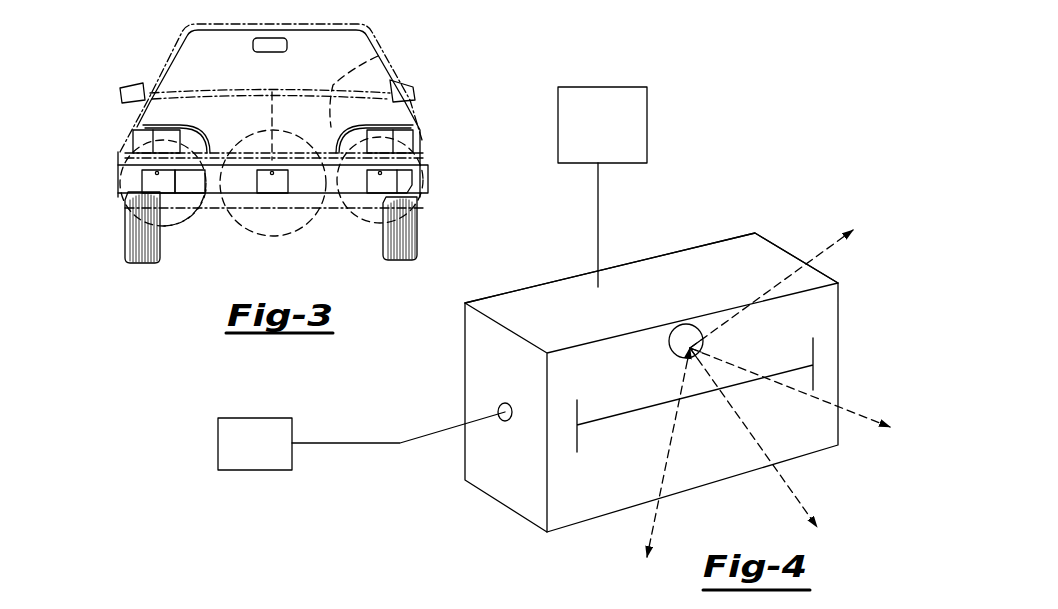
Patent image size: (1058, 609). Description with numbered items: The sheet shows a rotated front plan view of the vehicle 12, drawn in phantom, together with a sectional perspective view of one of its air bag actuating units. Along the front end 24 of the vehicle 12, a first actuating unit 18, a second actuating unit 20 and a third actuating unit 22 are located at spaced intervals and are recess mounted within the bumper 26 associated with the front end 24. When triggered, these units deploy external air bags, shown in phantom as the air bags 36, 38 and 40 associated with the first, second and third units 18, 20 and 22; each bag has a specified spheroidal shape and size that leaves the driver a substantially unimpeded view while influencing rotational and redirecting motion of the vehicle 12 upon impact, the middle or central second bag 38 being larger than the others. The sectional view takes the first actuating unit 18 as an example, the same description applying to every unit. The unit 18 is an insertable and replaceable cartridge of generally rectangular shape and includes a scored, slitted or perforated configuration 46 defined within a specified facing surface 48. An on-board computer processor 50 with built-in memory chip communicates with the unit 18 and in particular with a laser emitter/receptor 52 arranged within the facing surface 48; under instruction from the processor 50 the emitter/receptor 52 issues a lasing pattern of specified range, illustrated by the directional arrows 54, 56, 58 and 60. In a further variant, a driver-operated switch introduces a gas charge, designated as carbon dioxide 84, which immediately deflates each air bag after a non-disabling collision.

In FIG. 3, the vehicle 12 is at (110, 54).
In FIG. 3, the first actuating unit 18 is at (425, 148).
In FIG. 4, the first actuating unit 18 is at (745, 236).
In FIG. 3, the second actuating unit 20 is at (283, 185).
In FIG. 3, the third actuating unit 22 is at (150, 183).
In FIG. 3, the front end 24 is at (378, 57).
In FIG. 3, the bumper 26 is at (205, 195).
In FIG. 3, the air bag 36 is at (413, 208).
In FIG. 3, the second air bag 38 is at (260, 233).
In FIG. 3, the air bag 40 is at (127, 195).
In FIG. 4, the scored, slitted or perforated configuration 46 is at (629, 412).
In FIG. 4, the facing surface 48 is at (575, 516).
In FIG. 4, the computer processor 50 is at (218, 446).
In FIG. 4, the laser emitter/receptor 52 is at (678, 335).
In FIG. 4, the directional arrow 54 is at (814, 252).
In FIG. 4, the directional arrow 56 is at (820, 398).
In FIG. 4, the directional arrow 58 is at (773, 458).
In FIG. 4, the directional arrow 60 is at (650, 520).
In FIG. 4, the carbon dioxide charge 84 is at (580, 87).